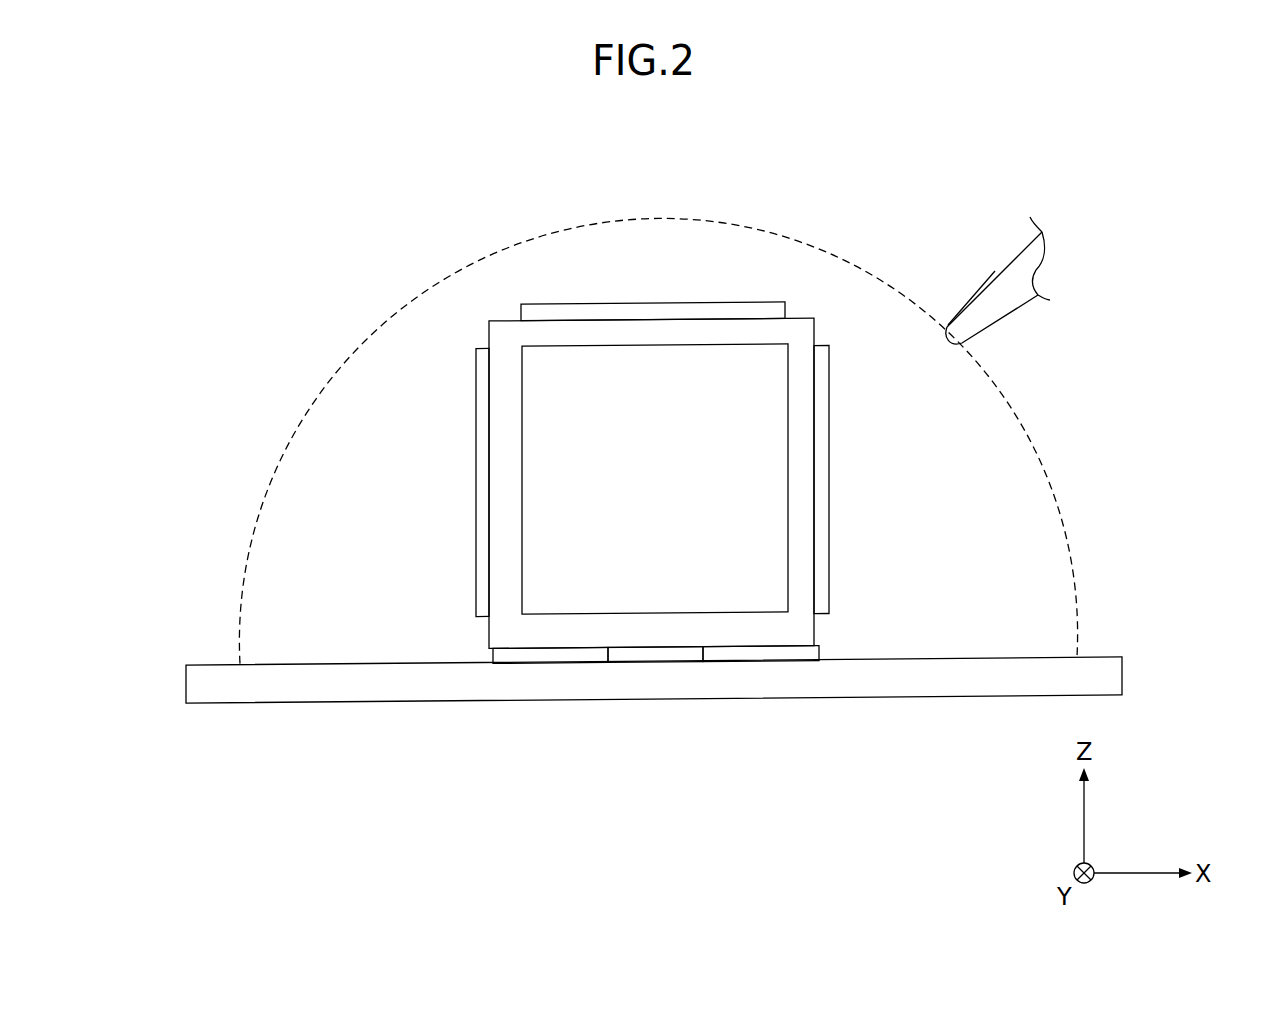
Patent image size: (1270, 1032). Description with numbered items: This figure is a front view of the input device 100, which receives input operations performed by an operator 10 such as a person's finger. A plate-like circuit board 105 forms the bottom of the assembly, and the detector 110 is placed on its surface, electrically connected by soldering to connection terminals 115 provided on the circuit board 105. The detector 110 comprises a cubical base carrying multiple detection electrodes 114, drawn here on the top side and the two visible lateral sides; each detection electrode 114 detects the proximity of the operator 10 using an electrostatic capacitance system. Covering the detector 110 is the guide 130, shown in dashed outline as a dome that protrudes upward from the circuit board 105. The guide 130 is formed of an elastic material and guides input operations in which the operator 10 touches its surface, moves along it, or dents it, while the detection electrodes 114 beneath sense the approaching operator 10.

The input device 100 is at (1217, 206).
The operator 10 is at (992, 270).
The circuit board 105 is at (952, 688).
The detector 110 is at (478, 306).
The detection electrodes 114 is at (653, 304).
The connection terminals 115 is at (548, 656).
The guide 130 is at (1000, 398).